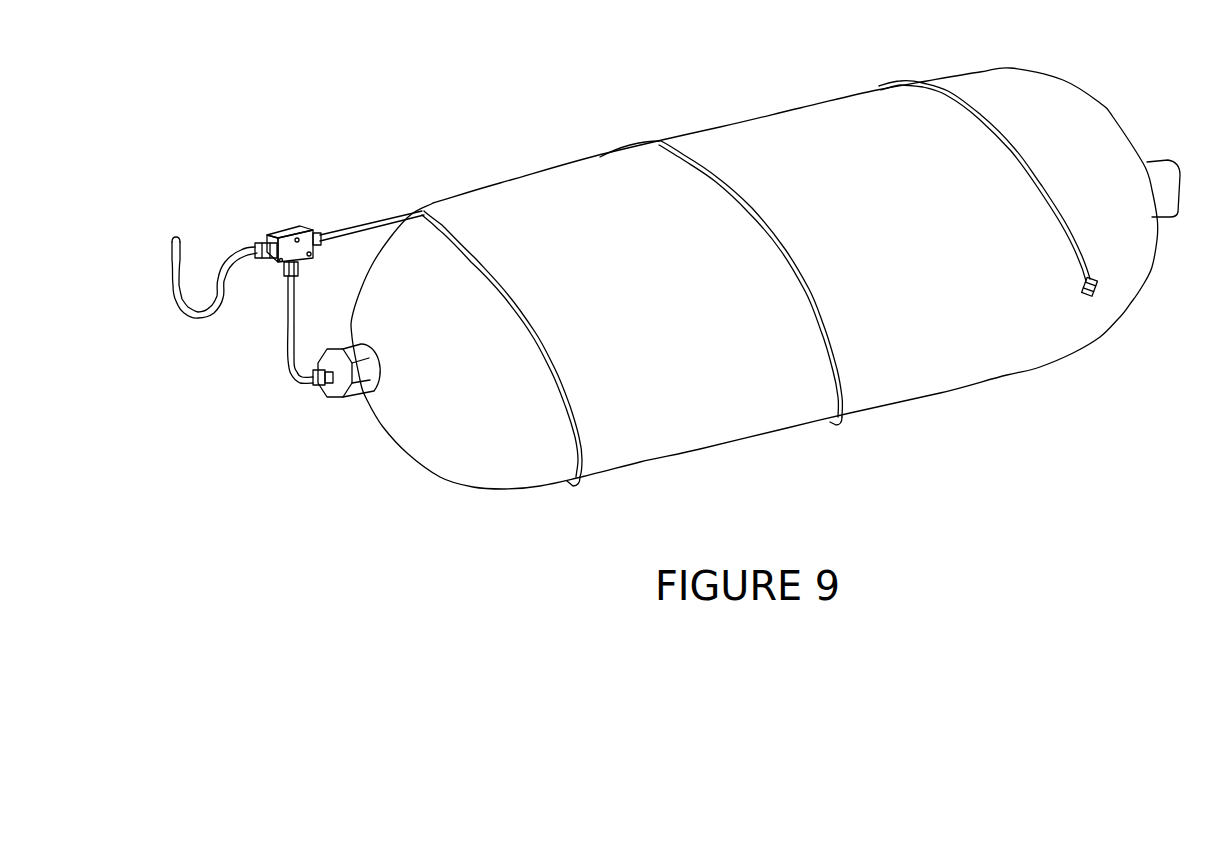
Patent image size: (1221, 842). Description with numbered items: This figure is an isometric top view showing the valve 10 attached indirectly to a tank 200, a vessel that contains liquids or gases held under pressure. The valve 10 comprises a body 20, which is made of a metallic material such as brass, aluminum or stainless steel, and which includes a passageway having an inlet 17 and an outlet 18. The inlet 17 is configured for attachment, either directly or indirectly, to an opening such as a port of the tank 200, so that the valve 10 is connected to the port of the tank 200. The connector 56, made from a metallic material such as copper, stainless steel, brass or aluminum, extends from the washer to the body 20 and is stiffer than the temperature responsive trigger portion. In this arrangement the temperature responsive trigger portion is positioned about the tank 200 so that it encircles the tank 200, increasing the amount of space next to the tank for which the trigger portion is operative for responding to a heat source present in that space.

The valve 10 is at (377, 275).
The inlet 17 is at (287, 277).
The outlet 18 is at (260, 247).
The body 20 is at (298, 227).
The connector 56 is at (452, 229).
The tank 200 is at (943, 392).